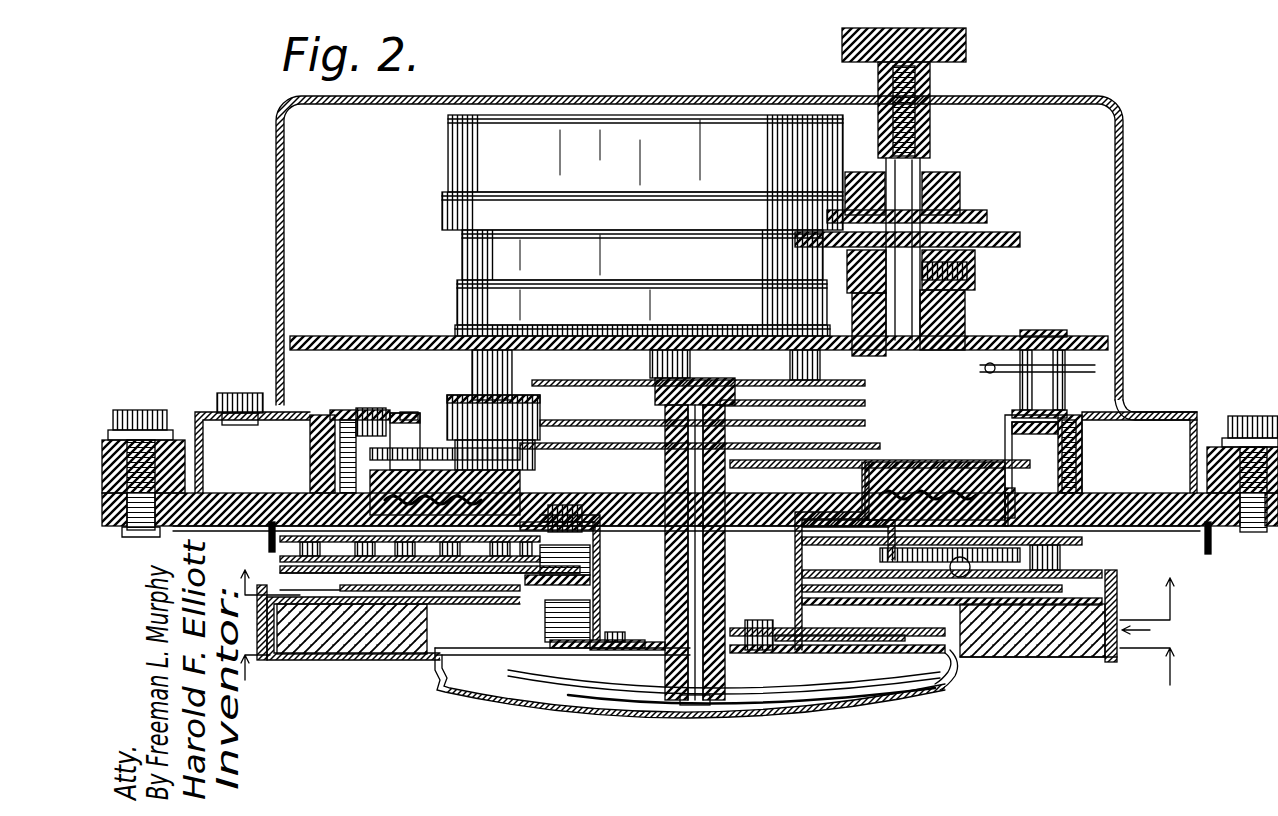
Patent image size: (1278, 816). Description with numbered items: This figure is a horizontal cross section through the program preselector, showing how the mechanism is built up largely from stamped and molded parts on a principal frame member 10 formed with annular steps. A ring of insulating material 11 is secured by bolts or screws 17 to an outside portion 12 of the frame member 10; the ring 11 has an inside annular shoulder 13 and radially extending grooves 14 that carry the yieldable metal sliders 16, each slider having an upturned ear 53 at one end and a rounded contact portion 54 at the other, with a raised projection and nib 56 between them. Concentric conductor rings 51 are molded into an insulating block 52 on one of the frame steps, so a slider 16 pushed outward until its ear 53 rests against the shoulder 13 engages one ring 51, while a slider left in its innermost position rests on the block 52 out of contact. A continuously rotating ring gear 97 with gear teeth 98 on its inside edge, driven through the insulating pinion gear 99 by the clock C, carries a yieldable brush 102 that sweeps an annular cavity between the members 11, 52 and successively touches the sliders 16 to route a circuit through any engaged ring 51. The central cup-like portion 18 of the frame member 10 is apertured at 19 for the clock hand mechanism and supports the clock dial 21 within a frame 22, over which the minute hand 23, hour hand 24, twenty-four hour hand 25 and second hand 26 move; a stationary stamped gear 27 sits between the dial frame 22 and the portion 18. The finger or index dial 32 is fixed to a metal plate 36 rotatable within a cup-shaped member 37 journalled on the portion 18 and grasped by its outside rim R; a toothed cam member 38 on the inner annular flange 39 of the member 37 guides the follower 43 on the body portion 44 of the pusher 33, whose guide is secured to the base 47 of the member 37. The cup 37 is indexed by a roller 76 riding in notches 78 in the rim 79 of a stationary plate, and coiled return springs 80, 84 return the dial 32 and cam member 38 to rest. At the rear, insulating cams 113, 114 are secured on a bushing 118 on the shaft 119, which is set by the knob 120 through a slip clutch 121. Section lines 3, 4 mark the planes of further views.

The clock C is at (478, 168).
The knob 120 is at (968, 46).
The insulating cam 113 is at (982, 216).
The insulating cam 114 is at (1020, 240).
The bushing 118 is at (970, 286).
The shaft 119 is at (935, 302).
The slip clutch 121 is at (833, 363).
The yieldable brush 102 is at (330, 478).
The slider 16 is at (367, 480).
The insulating pinion gear 99 is at (400, 440).
The ring gear 97 is at (355, 410).
The gear teeth 98 is at (372, 420).
The concentric conductor rings 51 is at (950, 466).
The insulating block 52 is at (985, 466).
The ring of insulating material 11 is at (1145, 495).
The outside portion 12 is at (1195, 440).
The inside annular shoulder 13 is at (210, 528).
The radially extending grooves 14 is at (222, 531).
The upturned ear 53 is at (269, 540).
The bolts or screws 17 is at (150, 430).
The follower 43 is at (515, 604).
The slider setting member 33 is at (410, 549).
The nib 56 is at (437, 549).
The body portion 44 is at (489, 549).
The base 47 is at (598, 517).
The rounded contact portion 54 is at (535, 512).
The coiled spring 84 is at (590, 553).
The coiled spring 80 is at (585, 620).
The twenty-four hour hand 25 is at (725, 662).
The cup-like portion 18 is at (795, 595).
The principal frame member 10 is at (784, 555).
The notches 78 is at (868, 535).
The rim 79 is at (1085, 545).
The roller 76 is at (1020, 538).
The inner annular flange 39 is at (808, 577).
The toothed cam member 38 is at (1062, 589).
The metal plate 36 is at (918, 605).
The index dial 32 is at (1068, 662).
The stationary stamped gear 27 is at (860, 640).
The aperture 19 is at (750, 635).
The clock dial 21 is at (805, 655).
The frame 22 is at (955, 680).
The second hand 26 is at (612, 704).
The minute hand 23 is at (560, 692).
The hour hand 24 is at (520, 671).
The section line 4 is at (722, 591).
The section line 3 is at (707, 674).
The cup-shaped metal member 37 is at (1148, 633).
The outside rim R is at (1118, 615).